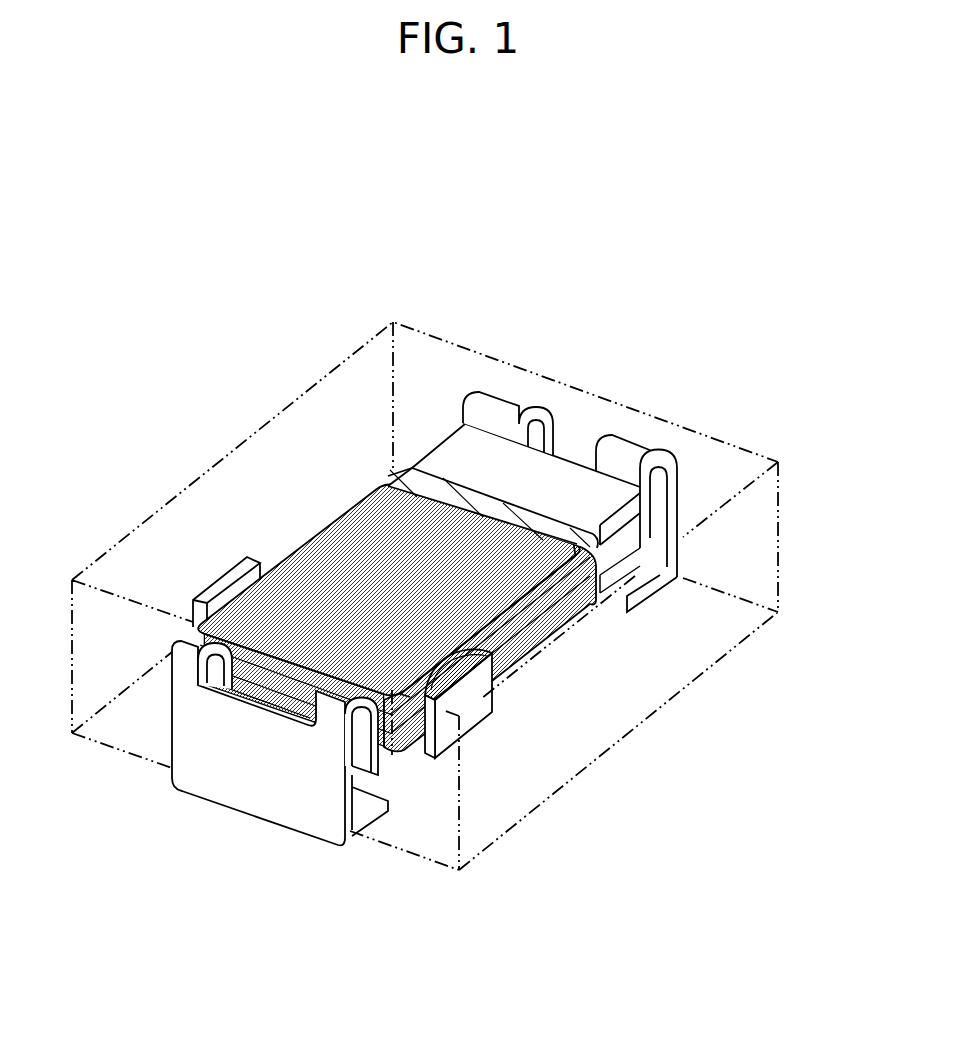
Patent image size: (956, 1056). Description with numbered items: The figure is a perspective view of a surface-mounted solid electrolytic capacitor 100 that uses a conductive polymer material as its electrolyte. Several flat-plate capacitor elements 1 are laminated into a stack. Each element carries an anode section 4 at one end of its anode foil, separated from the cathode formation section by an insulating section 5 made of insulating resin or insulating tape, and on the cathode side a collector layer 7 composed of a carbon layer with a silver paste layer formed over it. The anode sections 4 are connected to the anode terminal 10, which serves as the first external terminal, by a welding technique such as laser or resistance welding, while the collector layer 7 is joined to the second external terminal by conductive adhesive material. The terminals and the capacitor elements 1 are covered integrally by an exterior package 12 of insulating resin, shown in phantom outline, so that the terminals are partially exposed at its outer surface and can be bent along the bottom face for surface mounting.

The solid electrolytic capacitor 100 is at (436, 534).
The capacitor element 1 is at (397, 540).
The anode section 4 is at (455, 453).
The insulating section 5 is at (414, 481).
The collector layer 7 is at (277, 588).
The anode terminal 10 is at (627, 440).
The exterior package 12 is at (738, 470).